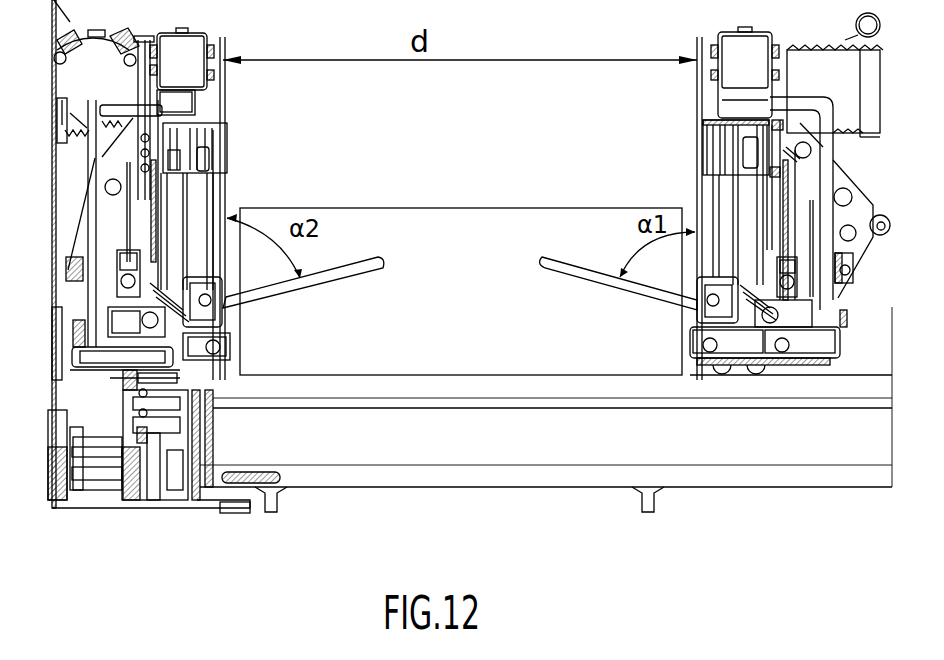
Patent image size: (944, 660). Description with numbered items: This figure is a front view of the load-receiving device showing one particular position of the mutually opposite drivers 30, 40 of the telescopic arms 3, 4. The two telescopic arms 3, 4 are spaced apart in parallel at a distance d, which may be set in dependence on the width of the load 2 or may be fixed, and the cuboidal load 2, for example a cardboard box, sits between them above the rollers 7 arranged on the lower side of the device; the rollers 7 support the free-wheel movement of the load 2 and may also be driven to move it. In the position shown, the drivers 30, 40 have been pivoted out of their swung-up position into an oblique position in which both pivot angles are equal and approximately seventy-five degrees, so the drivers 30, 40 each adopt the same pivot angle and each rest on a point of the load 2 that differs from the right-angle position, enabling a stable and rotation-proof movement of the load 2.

The load 2 is at (480, 245).
The telescopic arm 3 is at (723, 163).
The telescopic arm 4 is at (193, 197).
The rollers 7 is at (420, 390).
The driver 30 is at (568, 263).
The driver 40 is at (352, 267).